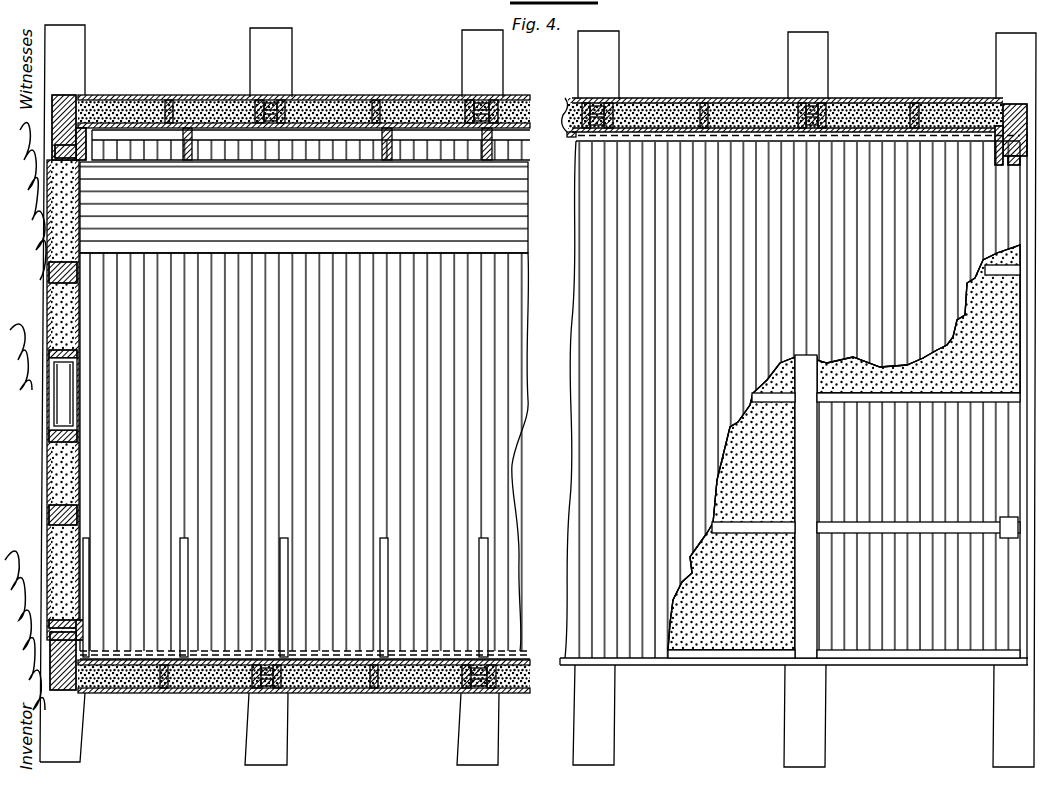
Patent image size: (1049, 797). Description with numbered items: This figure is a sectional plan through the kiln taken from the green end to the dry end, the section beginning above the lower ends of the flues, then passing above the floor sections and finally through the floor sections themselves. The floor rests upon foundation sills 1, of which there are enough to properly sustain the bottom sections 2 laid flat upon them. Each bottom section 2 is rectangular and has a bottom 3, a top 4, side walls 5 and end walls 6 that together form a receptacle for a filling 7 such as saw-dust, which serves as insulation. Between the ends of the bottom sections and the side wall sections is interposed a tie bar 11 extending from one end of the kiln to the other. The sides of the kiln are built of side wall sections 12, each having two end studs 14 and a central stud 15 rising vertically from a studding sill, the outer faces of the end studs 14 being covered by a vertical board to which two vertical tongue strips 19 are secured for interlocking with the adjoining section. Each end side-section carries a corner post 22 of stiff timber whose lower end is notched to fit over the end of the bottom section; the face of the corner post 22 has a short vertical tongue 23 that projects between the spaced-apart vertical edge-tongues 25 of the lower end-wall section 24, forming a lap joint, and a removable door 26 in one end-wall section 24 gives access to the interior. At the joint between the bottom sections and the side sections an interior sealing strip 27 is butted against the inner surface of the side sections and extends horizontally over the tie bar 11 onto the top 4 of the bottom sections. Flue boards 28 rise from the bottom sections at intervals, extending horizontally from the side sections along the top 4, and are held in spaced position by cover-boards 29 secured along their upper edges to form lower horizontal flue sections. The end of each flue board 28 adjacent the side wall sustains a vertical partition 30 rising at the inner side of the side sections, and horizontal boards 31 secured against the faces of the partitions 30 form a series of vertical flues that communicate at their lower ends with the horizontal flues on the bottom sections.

The foundation sill 1 is at (538, 396).
The bottom section 2 is at (916, 672).
The bottom 3 is at (918, 595).
The top 4 is at (589, 398).
The side wall 5 is at (817, 465).
The end wall 6 is at (890, 652).
The filling 7 is at (975, 350).
The tie bar 11 is at (148, 656).
The side wall section 12 is at (380, 96).
The end stud 14 is at (252, 688).
The central stud 15 is at (172, 690).
The tongue strip 19 is at (267, 692).
The corner post 22 is at (68, 100).
The vertical tongue 23 is at (88, 152).
The lower end-wall section 24 is at (80, 313).
The vertical edge-tongue 25 is at (95, 151).
The removable door 26 is at (49, 382).
The interior sealing strip 27 is at (424, 652).
The flue board 28 is at (188, 582).
The cover-board 29 is at (304, 207).
The vertical partition 30 is at (187, 160).
The horizontal board 31 is at (405, 165).